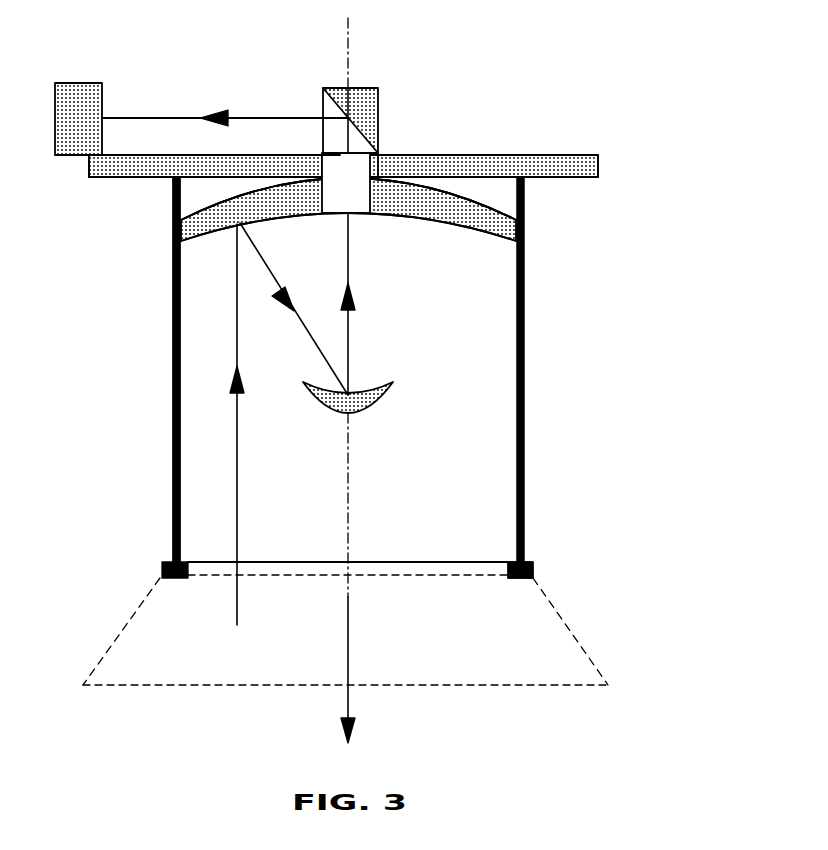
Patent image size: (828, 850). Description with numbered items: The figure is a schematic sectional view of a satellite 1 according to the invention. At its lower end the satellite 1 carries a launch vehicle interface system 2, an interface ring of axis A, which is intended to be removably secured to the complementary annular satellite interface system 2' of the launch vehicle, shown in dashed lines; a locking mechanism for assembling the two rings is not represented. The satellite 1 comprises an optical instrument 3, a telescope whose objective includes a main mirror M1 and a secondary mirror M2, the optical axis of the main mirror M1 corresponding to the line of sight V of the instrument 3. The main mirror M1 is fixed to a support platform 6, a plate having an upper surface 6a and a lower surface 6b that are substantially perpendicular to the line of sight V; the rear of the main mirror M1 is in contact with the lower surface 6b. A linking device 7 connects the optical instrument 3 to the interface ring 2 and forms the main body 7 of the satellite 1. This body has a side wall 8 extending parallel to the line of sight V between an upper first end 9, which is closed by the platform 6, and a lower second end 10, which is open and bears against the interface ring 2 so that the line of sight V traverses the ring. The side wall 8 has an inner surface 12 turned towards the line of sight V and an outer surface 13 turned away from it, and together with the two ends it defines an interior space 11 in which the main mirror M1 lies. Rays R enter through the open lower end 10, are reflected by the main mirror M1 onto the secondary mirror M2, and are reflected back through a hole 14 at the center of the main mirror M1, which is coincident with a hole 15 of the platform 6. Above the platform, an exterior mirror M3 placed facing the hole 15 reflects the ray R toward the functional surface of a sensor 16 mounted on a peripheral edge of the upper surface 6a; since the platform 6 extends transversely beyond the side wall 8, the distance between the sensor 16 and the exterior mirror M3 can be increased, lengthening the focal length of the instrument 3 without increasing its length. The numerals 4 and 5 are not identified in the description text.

The satellite 1 is at (672, 236).
The launch vehicle interface system 2 is at (370, 580).
The satellite interface system 2' is at (354, 631).
The optical instrument 3 is at (432, 246).
The lens 4 is at (488, 178).
The support surface 5 is at (461, 552).
The support platform 6 is at (604, 157).
The upper surface 6a is at (541, 155).
The lower surface 6b is at (110, 178).
The linking device 7 is at (530, 370).
The side wall 8 is at (530, 370).
The upper first end 9 is at (170, 178).
The lower second end 10 is at (527, 562).
The interior space 11 is at (410, 482).
The inner surface 12 is at (180, 343).
The outer surface 13 is at (172, 420).
The hole 14 is at (366, 217).
The hole 15 is at (330, 150).
The sensor 16 is at (102, 98).
The axis A is at (352, 36).
The rays R is at (254, 117).
The line of sight V is at (351, 700).
The main mirror M1 is at (488, 236).
The secondary mirror M2 is at (383, 402).
The exterior mirror M3 is at (378, 105).